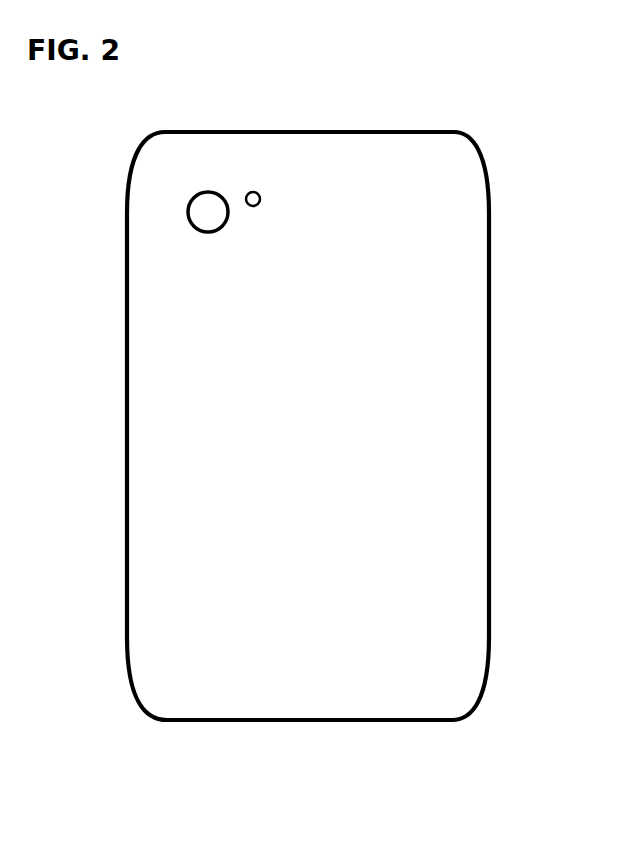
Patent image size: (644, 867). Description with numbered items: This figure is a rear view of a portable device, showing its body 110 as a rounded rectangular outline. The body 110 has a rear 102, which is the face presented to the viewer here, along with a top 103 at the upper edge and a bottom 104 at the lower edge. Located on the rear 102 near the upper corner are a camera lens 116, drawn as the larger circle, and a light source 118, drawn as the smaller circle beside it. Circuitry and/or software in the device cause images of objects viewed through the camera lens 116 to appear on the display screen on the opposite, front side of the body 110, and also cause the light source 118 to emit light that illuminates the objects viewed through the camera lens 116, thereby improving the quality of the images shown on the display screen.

The rear 102 is at (456, 702).
The top 103 is at (320, 118).
The bottom 104 is at (303, 737).
The body 110 is at (490, 368).
The camera lens 116 is at (211, 232).
The light source 118 is at (258, 206).